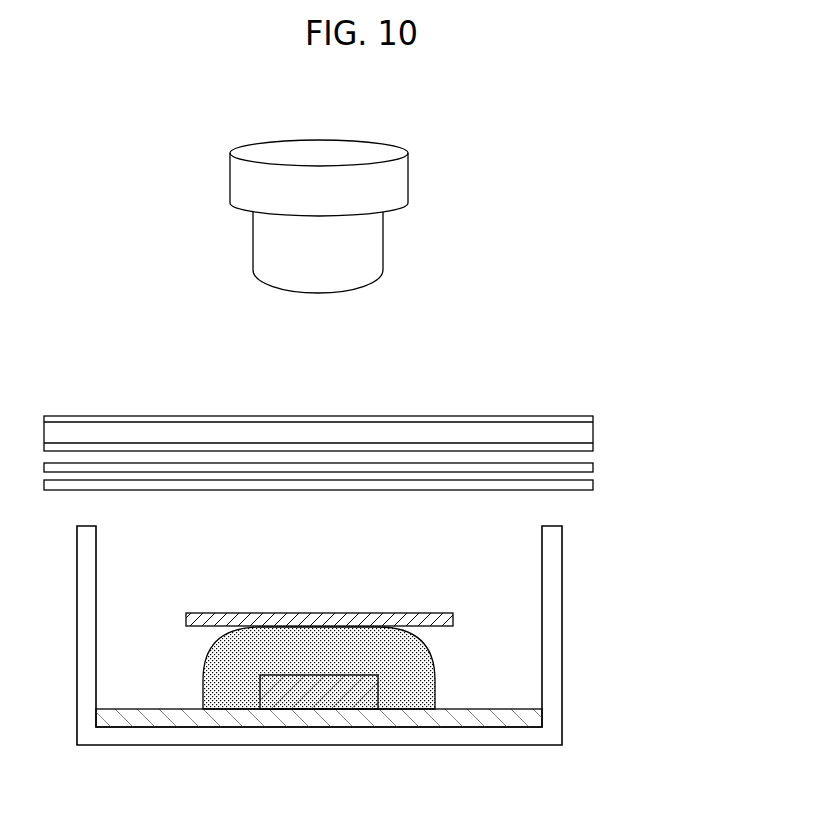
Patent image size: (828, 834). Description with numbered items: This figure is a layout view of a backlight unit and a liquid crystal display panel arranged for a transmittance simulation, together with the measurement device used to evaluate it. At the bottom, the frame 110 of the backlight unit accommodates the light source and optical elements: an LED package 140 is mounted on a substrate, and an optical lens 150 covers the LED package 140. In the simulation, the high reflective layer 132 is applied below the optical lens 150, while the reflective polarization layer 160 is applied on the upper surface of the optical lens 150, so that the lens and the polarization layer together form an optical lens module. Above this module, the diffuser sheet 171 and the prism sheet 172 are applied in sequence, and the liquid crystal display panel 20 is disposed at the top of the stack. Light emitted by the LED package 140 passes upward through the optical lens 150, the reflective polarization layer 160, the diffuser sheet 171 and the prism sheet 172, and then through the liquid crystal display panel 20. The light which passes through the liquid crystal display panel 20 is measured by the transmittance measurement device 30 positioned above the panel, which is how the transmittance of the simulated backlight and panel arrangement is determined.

The transmittance measurement device 30 is at (400, 178).
The lid 20 is at (602, 432).
The prism sheet 172 is at (595, 467).
The diffuser sheet 171 is at (595, 486).
The reflective polarization layer 160 is at (452, 620).
The optical lens 150 is at (420, 672).
The LED package 140 is at (295, 700).
The high reflective layer 132 is at (223, 720).
The frame 110 is at (393, 737).